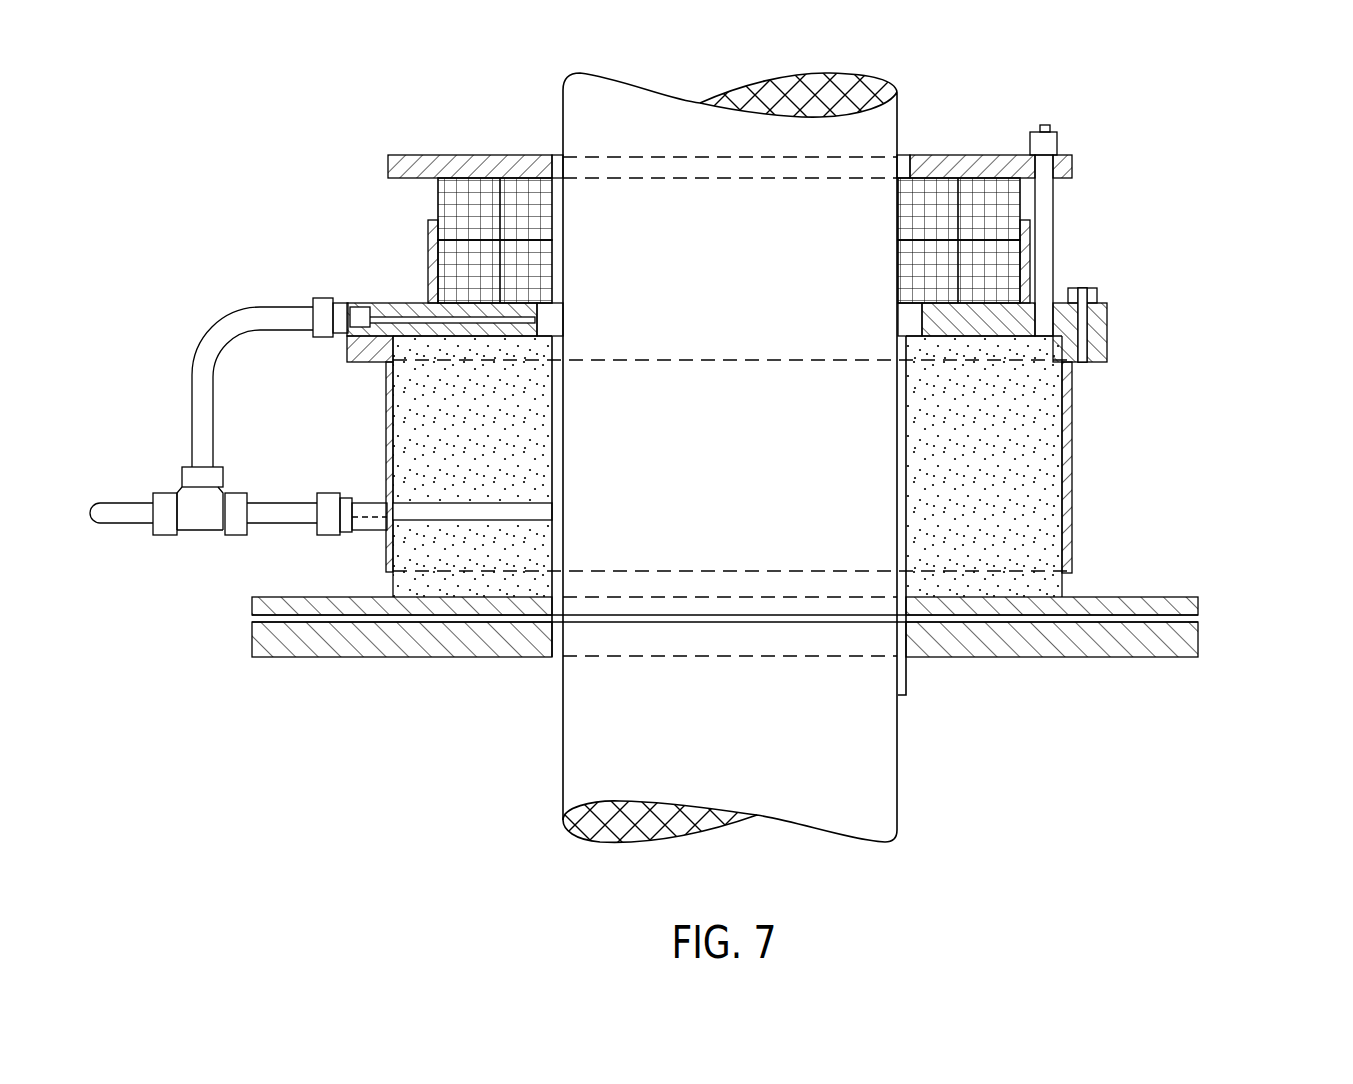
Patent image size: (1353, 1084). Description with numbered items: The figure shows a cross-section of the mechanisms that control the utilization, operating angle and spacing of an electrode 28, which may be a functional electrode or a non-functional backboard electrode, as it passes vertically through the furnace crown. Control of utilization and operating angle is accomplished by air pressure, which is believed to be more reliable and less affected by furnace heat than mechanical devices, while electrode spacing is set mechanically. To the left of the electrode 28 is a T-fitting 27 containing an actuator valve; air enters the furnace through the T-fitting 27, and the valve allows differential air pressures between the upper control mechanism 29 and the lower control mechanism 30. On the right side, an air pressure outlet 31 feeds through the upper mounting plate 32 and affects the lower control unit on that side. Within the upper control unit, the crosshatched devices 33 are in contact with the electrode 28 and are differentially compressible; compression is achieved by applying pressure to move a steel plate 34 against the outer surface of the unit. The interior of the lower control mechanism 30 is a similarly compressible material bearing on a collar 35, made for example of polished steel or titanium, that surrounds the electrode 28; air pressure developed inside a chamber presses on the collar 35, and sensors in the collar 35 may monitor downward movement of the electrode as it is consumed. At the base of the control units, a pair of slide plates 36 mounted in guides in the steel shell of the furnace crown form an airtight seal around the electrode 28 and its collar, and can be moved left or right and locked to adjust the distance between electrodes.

The T-fitting 27 is at (200, 545).
The electrode 28 is at (902, 845).
The upper control mechanism 29 is at (423, 203).
The lower control mechanism 30 is at (380, 580).
The air pressure outlet 31 is at (1058, 120).
The upper mounting plate 32 is at (968, 137).
The crosshatched devices 33 is at (465, 270).
The steel plate 34 is at (405, 240).
The collar 35 is at (913, 668).
The slide plates 36 is at (1222, 640).